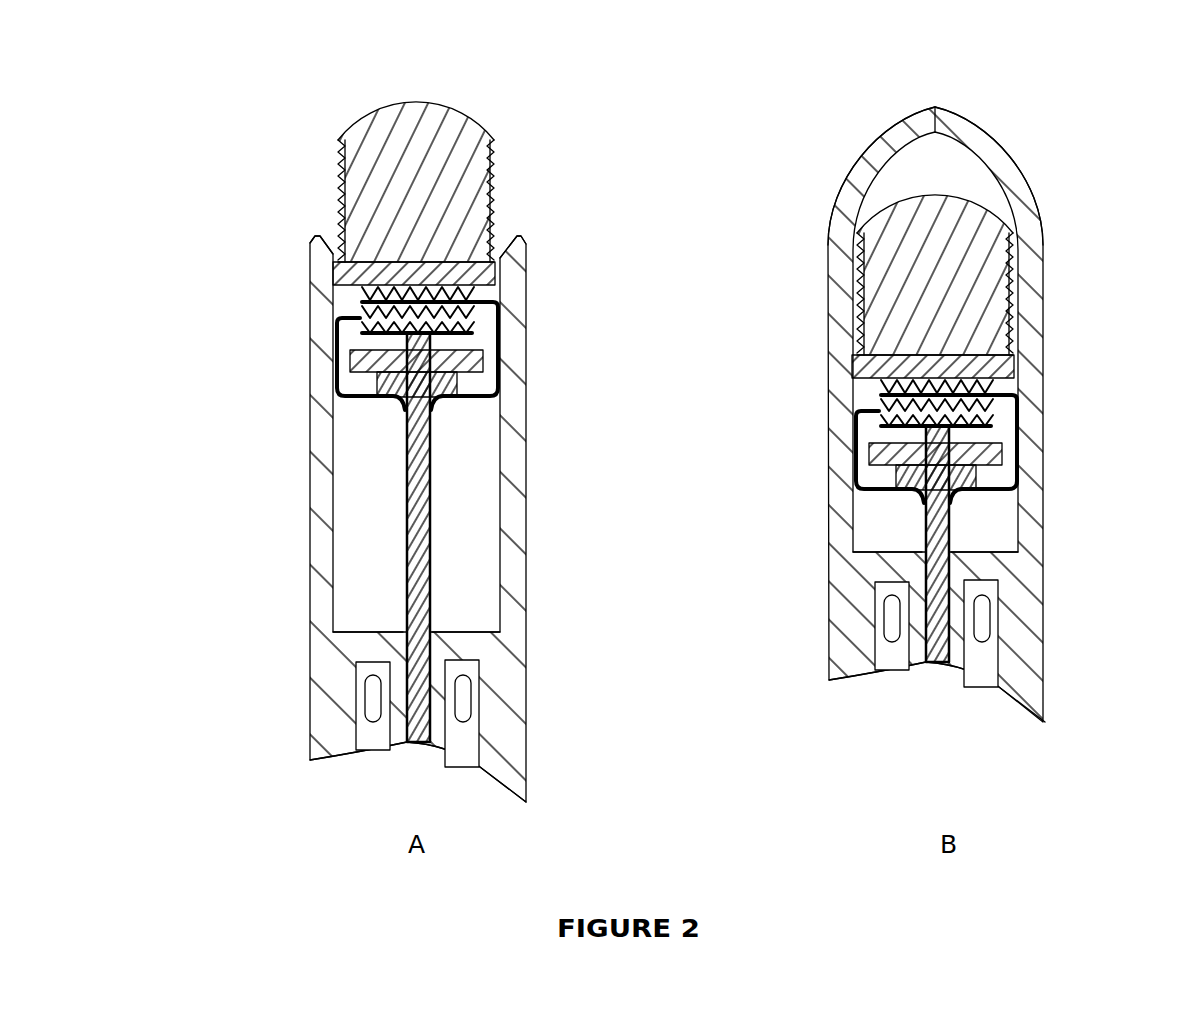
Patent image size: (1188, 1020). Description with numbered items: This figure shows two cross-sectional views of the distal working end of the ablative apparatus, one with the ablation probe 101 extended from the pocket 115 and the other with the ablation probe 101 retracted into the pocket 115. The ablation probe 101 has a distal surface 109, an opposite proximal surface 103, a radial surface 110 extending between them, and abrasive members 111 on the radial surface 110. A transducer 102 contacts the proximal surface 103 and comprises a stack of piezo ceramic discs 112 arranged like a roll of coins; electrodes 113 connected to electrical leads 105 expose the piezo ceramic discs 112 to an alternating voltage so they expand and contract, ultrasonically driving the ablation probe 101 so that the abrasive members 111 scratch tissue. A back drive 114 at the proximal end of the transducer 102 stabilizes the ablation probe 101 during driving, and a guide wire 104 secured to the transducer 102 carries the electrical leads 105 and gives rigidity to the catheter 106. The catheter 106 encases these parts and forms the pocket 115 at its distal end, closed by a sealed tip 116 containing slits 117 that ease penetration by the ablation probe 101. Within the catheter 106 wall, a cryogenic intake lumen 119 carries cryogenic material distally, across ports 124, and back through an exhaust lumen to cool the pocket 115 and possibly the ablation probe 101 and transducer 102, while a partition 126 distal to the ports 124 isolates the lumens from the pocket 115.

The ablation probe 101 is at (388, 168).
The transducer 102 is at (653, 339).
The proximal surface 103 is at (372, 262).
The guide wire 104 is at (406, 450).
The electrical leads 105 is at (395, 390).
The catheter 106 is at (335, 718).
The distal surface 109 is at (433, 100).
The radial surface 110 is at (496, 178).
The abrasive members 111 is at (495, 217).
The piezo ceramic discs 112 is at (362, 313).
The electrodes 113 is at (365, 298).
The back drive 114 is at (368, 366).
The pocket 115 is at (373, 617).
The sealed tip 116 is at (923, 115).
The slits 117 is at (514, 247).
The intake lumen 119 is at (462, 733).
The ports 124 is at (465, 690).
The partition 126 is at (472, 650).